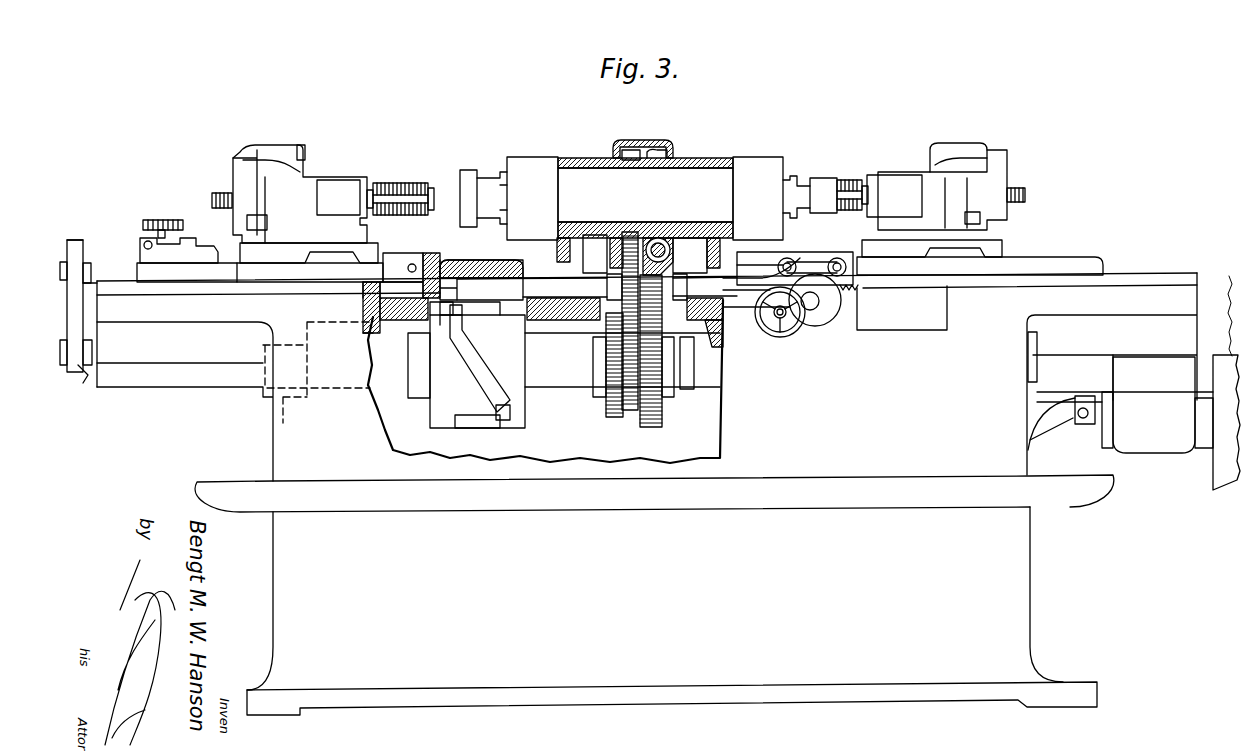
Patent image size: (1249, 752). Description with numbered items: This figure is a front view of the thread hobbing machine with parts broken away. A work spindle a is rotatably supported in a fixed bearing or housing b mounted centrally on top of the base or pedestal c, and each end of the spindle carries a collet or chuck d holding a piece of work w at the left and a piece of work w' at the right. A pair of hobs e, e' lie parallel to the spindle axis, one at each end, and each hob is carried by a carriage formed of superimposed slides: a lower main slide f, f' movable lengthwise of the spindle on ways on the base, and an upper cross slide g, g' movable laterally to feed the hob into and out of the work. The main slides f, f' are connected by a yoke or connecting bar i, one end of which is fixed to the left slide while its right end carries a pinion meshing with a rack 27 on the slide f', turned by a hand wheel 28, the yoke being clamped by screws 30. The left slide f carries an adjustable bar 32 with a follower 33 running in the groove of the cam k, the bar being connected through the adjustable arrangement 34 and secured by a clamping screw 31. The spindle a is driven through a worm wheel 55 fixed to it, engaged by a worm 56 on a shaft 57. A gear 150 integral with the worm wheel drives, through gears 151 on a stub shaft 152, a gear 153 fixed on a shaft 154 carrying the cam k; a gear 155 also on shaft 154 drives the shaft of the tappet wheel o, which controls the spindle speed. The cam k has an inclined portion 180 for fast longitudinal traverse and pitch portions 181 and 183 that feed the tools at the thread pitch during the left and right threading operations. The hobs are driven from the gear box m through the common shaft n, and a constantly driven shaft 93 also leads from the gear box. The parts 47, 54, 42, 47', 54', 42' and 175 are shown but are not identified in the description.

The tappet wheel o is at (78, 240).
The bolt 175 is at (84, 375).
The clamping screw 31 is at (140, 248).
The adjustable connection arrangement 34 is at (161, 219).
The tool holder 47 is at (300, 179).
The set screw 54 is at (217, 211).
The adjusting shaft 42 is at (378, 174).
The hob e is at (403, 185).
The cross slide g is at (318, 253).
The main slide f is at (481, 277).
The adjustable bar 32 is at (475, 280).
The piece of work w is at (483, 184).
The collet or chuck d is at (528, 162).
The bearing or housing b is at (585, 158).
The work spindle a is at (690, 172).
The gear 150 is at (632, 150).
The worm wheel 55 is at (662, 150).
The worm 56 is at (672, 245).
The shaft 57 is at (666, 254).
The gears 151 is at (633, 240).
The stub shaft 152 is at (607, 289).
The gear 153 is at (655, 428).
The gear 155 is at (618, 413).
The shaft 154 is at (561, 376).
The cam k is at (445, 398).
The inclined portion 180 is at (473, 367).
The pitch portion 183 is at (455, 312).
The follower 33 is at (443, 315).
The pitch portion 181 is at (502, 420).
The piece of work w' is at (810, 181).
The hob e' is at (850, 180).
The adjusting shaft 42' is at (880, 167).
The tool holder 47' is at (937, 172).
The set screw 54' is at (1029, 181).
The cross slide g' is at (915, 243).
The main slide f' is at (980, 248).
The screws 30 is at (790, 258).
The rack 27 is at (858, 288).
The hand wheel 28 is at (778, 338).
The yoke or connecting bar i is at (735, 305).
The base or pedestal c is at (664, 494).
The gear box m is at (1155, 455).
The constantly driven shaft 93 is at (1062, 432).
The common shaft n is at (1226, 490).